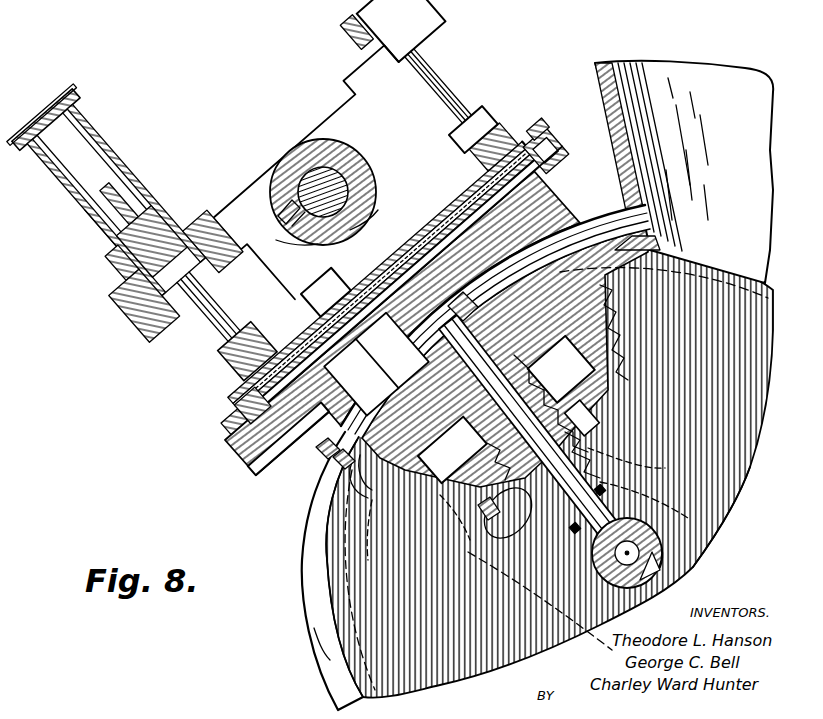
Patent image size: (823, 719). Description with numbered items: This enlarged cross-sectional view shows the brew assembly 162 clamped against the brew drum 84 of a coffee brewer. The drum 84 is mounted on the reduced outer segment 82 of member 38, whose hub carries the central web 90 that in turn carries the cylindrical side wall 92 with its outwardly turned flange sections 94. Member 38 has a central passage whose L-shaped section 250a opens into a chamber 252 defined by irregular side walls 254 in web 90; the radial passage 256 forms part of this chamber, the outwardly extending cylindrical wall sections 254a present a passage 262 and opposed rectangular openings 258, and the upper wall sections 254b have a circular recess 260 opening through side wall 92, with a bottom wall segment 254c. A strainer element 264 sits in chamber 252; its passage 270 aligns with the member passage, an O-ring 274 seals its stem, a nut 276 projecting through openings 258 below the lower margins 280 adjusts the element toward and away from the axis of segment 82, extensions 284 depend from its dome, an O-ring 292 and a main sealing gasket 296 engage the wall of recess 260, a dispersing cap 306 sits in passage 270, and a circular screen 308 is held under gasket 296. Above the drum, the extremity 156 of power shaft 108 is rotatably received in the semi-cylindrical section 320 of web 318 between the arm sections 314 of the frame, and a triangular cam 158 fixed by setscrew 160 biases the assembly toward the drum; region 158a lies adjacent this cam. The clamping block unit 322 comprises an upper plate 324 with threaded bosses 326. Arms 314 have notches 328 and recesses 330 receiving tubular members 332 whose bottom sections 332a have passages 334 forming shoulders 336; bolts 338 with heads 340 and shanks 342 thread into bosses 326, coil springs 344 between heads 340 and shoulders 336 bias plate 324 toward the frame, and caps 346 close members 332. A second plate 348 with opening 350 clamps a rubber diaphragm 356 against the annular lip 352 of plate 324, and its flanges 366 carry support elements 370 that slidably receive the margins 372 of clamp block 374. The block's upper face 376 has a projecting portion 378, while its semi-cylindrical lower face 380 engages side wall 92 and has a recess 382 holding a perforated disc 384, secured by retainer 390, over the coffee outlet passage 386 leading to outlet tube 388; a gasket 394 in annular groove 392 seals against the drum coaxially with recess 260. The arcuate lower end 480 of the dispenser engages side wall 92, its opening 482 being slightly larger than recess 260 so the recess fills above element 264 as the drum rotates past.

The member 38 is at (668, 556).
The outer segment 82 is at (662, 548).
The brew drum 84 is at (300, 590).
The web 90 is at (730, 492).
The cylindrical side wall 92 is at (327, 545).
The flange sections 94 is at (316, 630).
The power shaft 108 is at (330, 168).
The extremity of shaft 156 is at (300, 155).
The triangular cam 158 is at (348, 188).
The keyway 158a is at (355, 203).
The setscrew 160 is at (298, 232).
The brew assembly 162 is at (533, 135).
The L-shaped section of passage 250a is at (652, 545).
The chamber 252 is at (592, 384).
The side walls 254 is at (612, 342).
The cylindrical wall sections 254a is at (606, 442).
The upper cylindrical wall sections 254b is at (618, 306).
The bottom wall segment 254c is at (450, 500).
The radially extending passage 256 is at (645, 506).
The rectangular openings 258 is at (480, 528).
The circular recess 260 is at (378, 500).
The passage 262 is at (456, 522).
The strainer element 264 is at (561, 369).
The passage 270 is at (532, 562).
The O-ring 274 is at (634, 456).
The nut 276 is at (600, 418).
The lower margins 280 is at (518, 538).
The extensions 284 is at (464, 450).
The O-ring 292 is at (664, 283).
The main sealing gasket 296 is at (354, 482).
The dispersing cap 306 is at (470, 330).
The circular screen 308 is at (480, 305).
The arm sections 314 is at (462, 58).
The outer web 318 is at (250, 190).
The semi-cylindrical section 320 is at (362, 172).
The clamping block unit 322 is at (545, 198).
The upper plate 324 is at (258, 340).
The bosses 326 is at (480, 118).
The notches 328 is at (212, 318).
The cylindrical recesses 330 is at (152, 296).
The tubular member 332 is at (152, 163).
The bottom section 332a is at (170, 208).
The central passage 334 is at (206, 218).
The internal shoulder 336 is at (158, 200).
The bolt 338 is at (114, 258).
The enlarged head 340 is at (120, 194).
The shank 342 is at (214, 298).
The coil spring 344 is at (122, 231).
The cap 346 is at (72, 94).
The second plate 348 is at (510, 138).
The circular opening 350 is at (318, 328).
The annular lip 352 is at (468, 172).
The rubber diaphragm 356 is at (456, 194).
The flanges 366 is at (540, 140).
The support elements 370 is at (548, 158).
The margins 372 is at (548, 150).
The clamp block 374 is at (536, 183).
The upper face 376 is at (245, 405).
The projecting portion 378 is at (410, 228).
The lower face 380 is at (632, 232).
The circular recess 382 is at (602, 232).
The perforated disc 384 is at (440, 325).
The coffee outlet passage 386 is at (361, 377).
The coffee outlet tube 388 is at (245, 458).
The retainer 390 is at (391, 351).
The annular groove 392 is at (322, 455).
The gasket 394 is at (340, 465).
The lower end of dispenser device 480 is at (640, 232).
The opening 482 is at (657, 251).